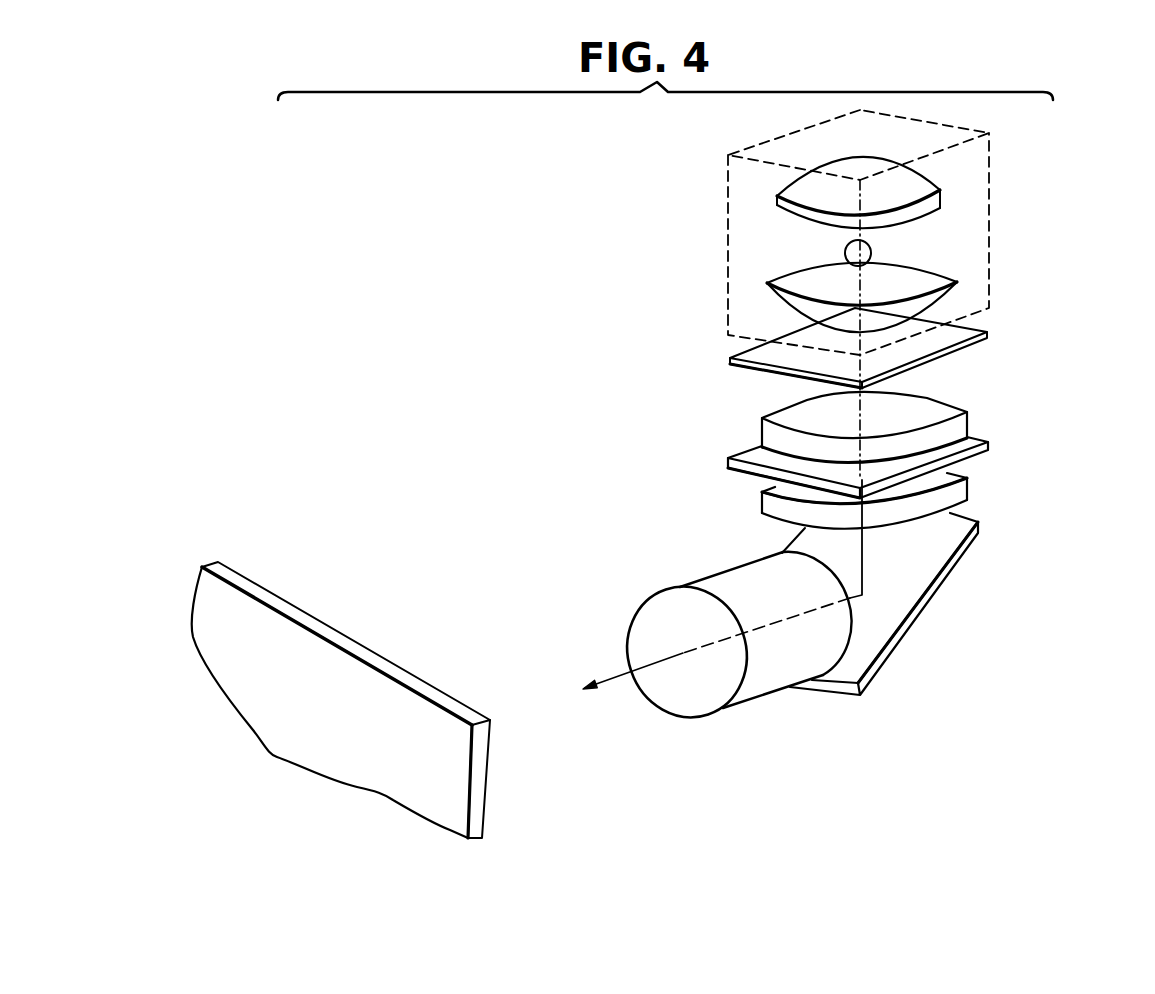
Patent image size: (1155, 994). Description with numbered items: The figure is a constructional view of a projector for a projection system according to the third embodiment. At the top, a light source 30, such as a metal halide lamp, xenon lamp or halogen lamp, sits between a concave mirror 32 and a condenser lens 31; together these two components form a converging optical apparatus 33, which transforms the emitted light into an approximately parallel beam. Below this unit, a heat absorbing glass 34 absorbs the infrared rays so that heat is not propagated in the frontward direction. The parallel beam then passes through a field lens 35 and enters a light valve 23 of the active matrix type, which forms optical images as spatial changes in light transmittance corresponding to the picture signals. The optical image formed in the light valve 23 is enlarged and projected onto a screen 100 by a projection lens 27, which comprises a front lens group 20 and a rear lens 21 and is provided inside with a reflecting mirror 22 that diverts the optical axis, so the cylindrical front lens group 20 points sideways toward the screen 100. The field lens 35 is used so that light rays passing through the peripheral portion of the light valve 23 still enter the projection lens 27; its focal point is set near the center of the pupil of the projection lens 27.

The front lens group 20 is at (777, 690).
The rear lens 21 is at (968, 495).
The reflecting mirror 22 is at (965, 547).
The light valve 23 is at (990, 452).
The projection lens 27 is at (717, 573).
The light source 30 is at (872, 250).
The condenser lens 31 is at (957, 282).
The concave mirror 32 is at (938, 190).
The converging optical apparatus 33 is at (728, 263).
The heat absorbing glass 34 is at (988, 335).
The field lens 35 is at (970, 423).
The screen 100 is at (490, 767).